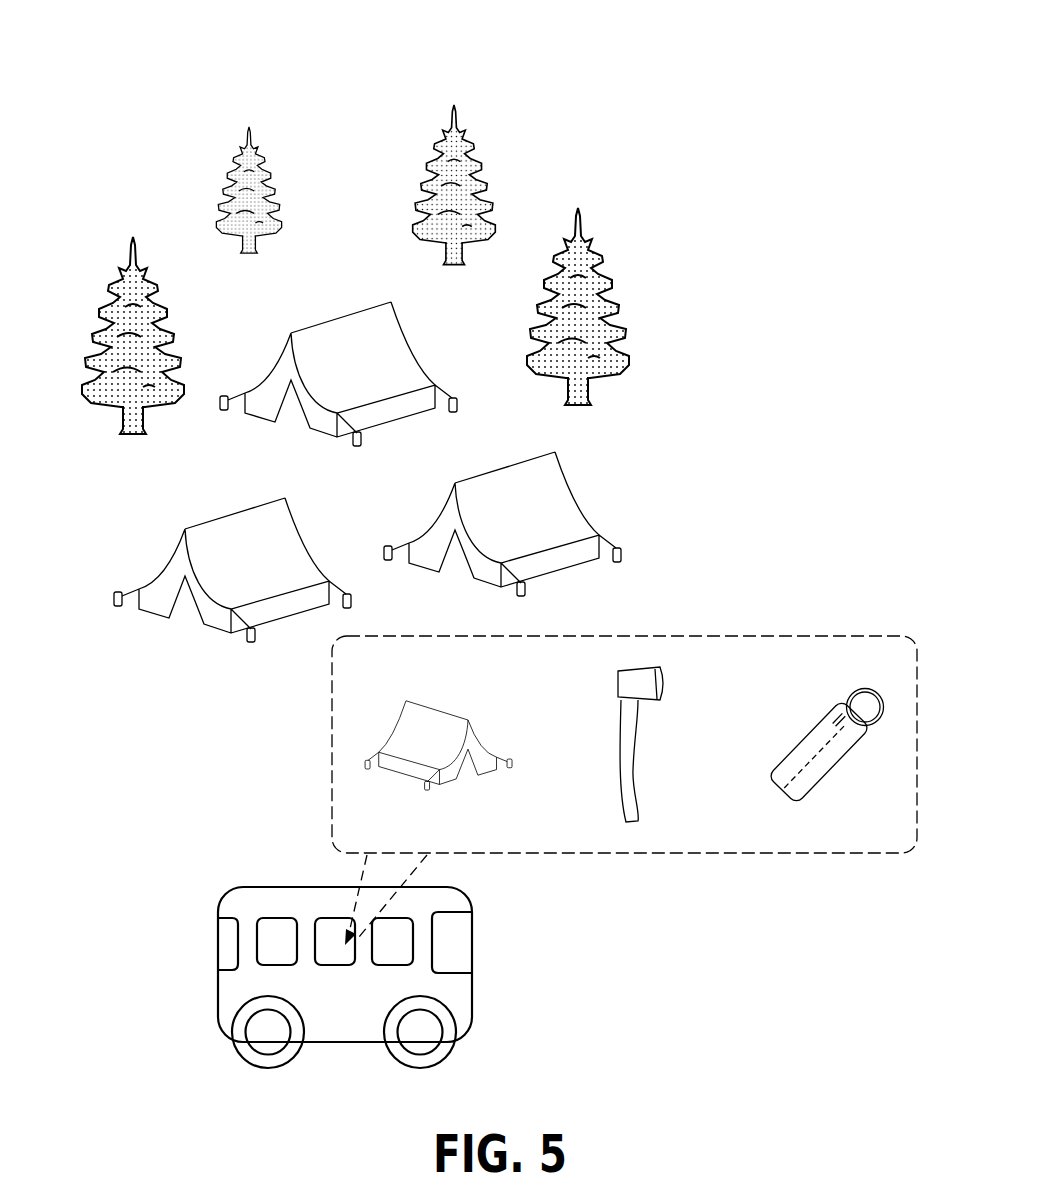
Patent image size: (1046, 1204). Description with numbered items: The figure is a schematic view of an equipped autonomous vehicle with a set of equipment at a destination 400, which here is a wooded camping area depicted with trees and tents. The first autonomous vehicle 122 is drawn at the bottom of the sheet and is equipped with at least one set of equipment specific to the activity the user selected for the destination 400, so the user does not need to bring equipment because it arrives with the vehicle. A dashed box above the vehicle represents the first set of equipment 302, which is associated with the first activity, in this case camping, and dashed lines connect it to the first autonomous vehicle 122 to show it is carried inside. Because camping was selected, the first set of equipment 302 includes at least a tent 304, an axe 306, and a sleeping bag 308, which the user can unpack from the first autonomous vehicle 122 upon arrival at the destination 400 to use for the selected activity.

The destination 400 is at (553, 124).
The first set of equipment 302 is at (722, 635).
The tent 304 is at (485, 732).
The axe 306 is at (614, 762).
The sleeping bag 308 is at (802, 723).
The first autonomous vehicle 122 is at (290, 887).